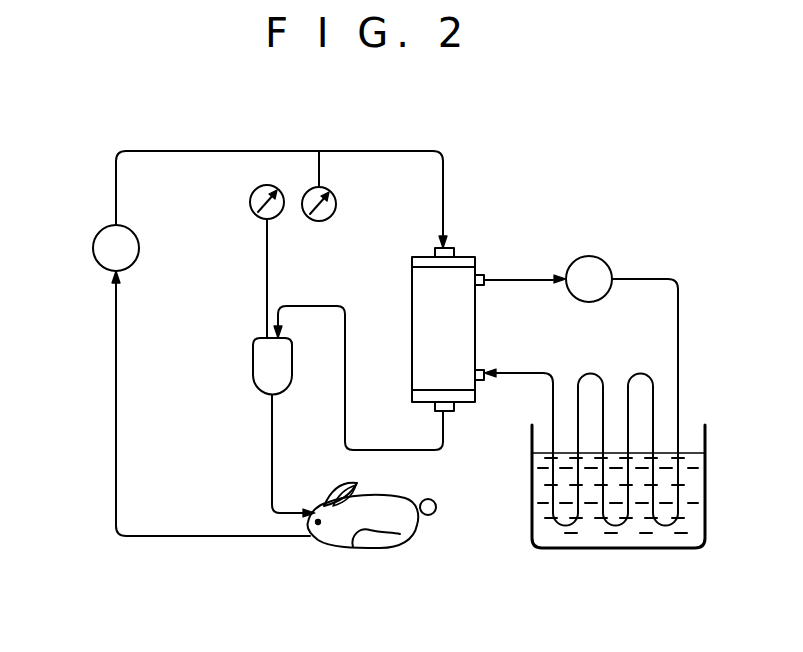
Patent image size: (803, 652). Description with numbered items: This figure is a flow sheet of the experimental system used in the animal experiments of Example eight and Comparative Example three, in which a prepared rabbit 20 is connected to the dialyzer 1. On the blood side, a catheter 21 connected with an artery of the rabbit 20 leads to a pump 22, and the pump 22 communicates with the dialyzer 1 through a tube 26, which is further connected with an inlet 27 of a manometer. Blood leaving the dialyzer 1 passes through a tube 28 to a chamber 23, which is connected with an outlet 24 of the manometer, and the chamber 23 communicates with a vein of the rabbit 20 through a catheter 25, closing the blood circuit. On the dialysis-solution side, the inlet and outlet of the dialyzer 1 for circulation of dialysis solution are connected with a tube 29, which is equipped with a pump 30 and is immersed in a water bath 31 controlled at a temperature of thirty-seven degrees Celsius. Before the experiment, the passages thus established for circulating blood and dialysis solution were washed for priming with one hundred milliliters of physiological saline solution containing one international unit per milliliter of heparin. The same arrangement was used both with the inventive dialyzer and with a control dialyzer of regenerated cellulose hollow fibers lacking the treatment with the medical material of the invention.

The dialyzer 1 is at (452, 372).
The rabbit 20 is at (348, 548).
The catheter 21 is at (210, 538).
The pump 22 is at (94, 254).
The chamber 23 is at (253, 360).
The outlet of a manometer 24 is at (250, 202).
The catheter 25 is at (270, 460).
The tube 26 is at (240, 151).
The inlet of a manometer 27 is at (338, 204).
The tube 28 is at (345, 362).
The tube 29 is at (525, 274).
The pump 30 is at (604, 258).
The water bath 31 is at (632, 548).